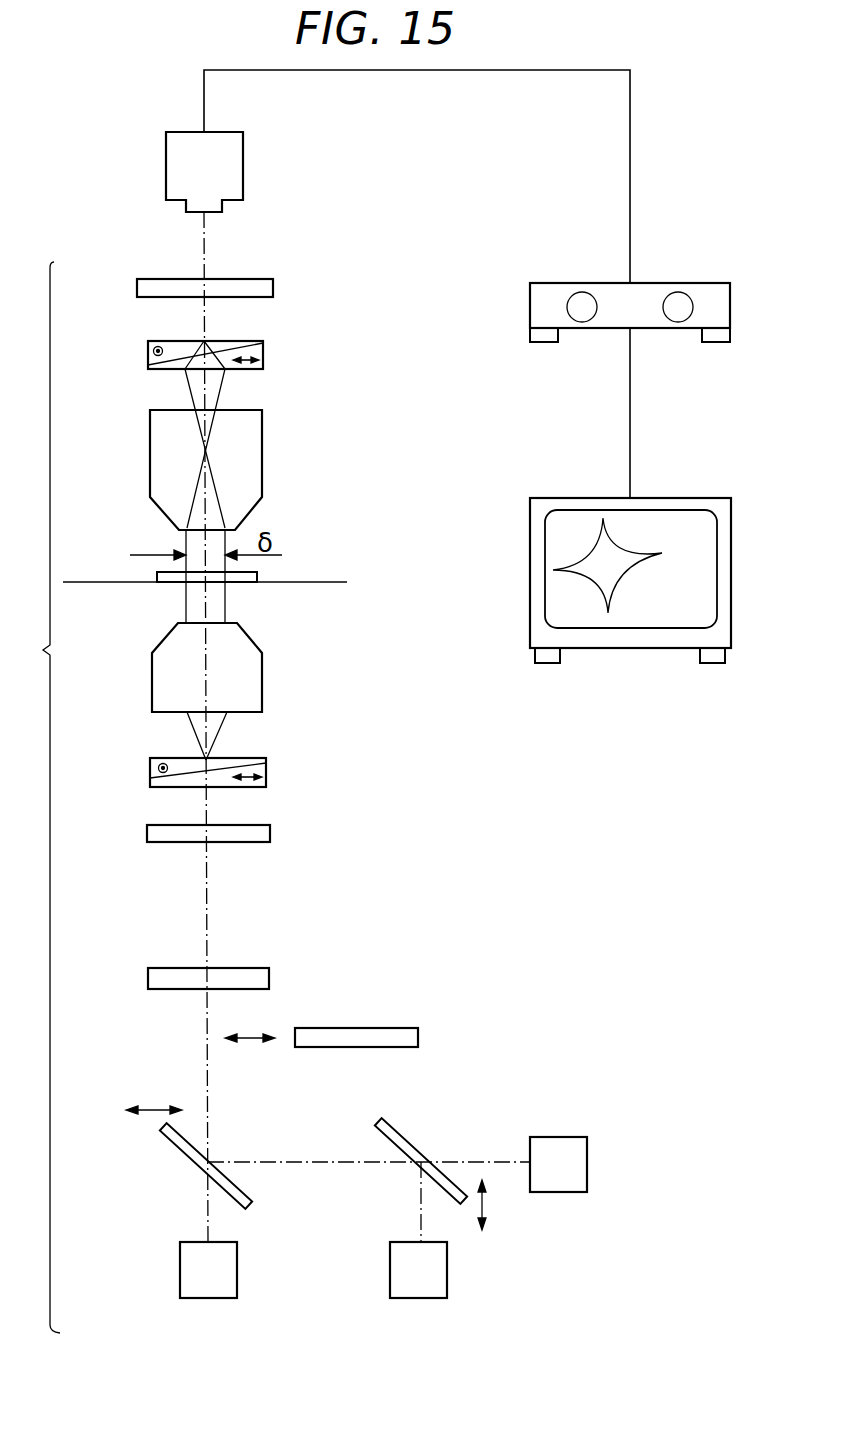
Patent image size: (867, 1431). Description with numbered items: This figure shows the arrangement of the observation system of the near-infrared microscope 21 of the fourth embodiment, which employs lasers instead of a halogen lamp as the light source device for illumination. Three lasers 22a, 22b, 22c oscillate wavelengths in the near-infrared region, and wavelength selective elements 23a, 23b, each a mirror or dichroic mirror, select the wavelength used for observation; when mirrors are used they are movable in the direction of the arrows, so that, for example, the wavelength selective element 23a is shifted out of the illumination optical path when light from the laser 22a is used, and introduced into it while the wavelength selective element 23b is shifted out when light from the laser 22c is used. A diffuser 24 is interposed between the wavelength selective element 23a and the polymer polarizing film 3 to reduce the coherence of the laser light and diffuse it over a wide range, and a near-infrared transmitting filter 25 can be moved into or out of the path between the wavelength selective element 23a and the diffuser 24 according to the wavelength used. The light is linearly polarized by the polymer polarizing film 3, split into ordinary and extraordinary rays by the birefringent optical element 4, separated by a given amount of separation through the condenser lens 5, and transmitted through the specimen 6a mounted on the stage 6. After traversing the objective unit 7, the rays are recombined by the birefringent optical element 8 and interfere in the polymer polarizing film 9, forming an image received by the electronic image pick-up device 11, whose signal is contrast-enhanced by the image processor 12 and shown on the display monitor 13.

The polymer polarizing film 3 is at (147, 834).
The birefringent optical element 4 is at (150, 772).
The condenser lens 5 is at (152, 680).
The stage 6 is at (80, 582).
The specimen 6a is at (257, 573).
The objective unit 7 is at (152, 462).
The birefringent optical element 8 is at (148, 352).
The polymer polarizing film 9 is at (137, 287).
The electronic image pick-up device 11 is at (237, 167).
The image processor 12 is at (530, 305).
The display monitor 13 is at (530, 565).
The near-infrared microscope 21 is at (36, 797).
The laser 22a is at (180, 1275).
The laser 22b is at (447, 1275).
The laser 22c is at (587, 1158).
The wavelength selective element 23a is at (170, 1133).
The wavelength selective element 23b is at (393, 1124).
The diffuser 24 is at (148, 980).
The near-infrared transmitting filter 25 is at (418, 1036).